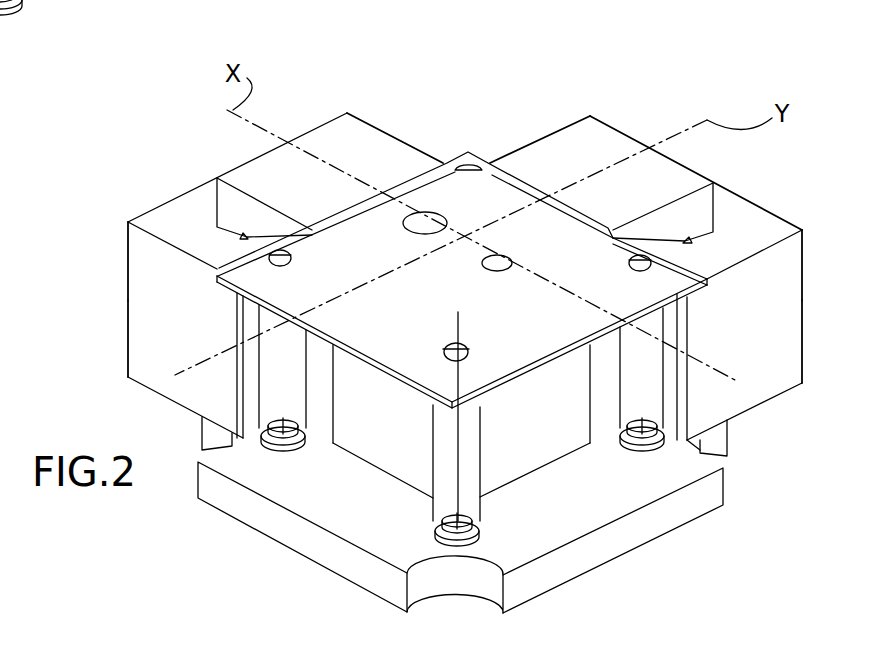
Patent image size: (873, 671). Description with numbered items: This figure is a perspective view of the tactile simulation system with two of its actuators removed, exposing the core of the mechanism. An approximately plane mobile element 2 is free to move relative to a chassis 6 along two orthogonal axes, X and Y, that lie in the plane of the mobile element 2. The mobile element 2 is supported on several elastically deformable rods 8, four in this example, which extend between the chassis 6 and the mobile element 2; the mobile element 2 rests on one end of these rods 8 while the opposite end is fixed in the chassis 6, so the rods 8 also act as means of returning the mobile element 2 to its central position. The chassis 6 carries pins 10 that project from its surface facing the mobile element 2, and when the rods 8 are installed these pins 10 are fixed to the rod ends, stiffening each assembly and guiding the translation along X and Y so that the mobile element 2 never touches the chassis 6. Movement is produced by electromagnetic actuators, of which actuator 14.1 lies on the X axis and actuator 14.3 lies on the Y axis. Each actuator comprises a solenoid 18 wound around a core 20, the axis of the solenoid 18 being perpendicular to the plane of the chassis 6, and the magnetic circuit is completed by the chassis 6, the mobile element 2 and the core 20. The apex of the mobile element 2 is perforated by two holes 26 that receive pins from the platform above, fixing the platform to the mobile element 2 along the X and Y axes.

The mobile element 2 is at (485, 132).
The chassis 6 is at (635, 528).
The elastically deformable rods 8 is at (443, 473).
The pins 10 is at (283, 428).
The electromagnetic actuator 14.1 is at (148, 182).
The electromagnetic actuator 14.3 is at (652, 102).
The solenoid 18 is at (145, 273).
The core 20 is at (227, 205).
The holes 26 is at (423, 222).